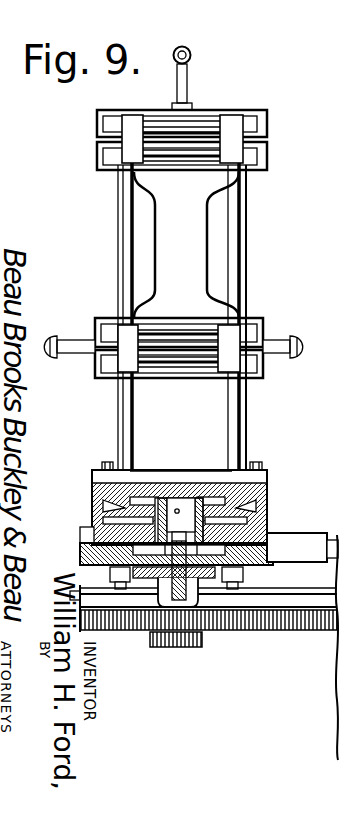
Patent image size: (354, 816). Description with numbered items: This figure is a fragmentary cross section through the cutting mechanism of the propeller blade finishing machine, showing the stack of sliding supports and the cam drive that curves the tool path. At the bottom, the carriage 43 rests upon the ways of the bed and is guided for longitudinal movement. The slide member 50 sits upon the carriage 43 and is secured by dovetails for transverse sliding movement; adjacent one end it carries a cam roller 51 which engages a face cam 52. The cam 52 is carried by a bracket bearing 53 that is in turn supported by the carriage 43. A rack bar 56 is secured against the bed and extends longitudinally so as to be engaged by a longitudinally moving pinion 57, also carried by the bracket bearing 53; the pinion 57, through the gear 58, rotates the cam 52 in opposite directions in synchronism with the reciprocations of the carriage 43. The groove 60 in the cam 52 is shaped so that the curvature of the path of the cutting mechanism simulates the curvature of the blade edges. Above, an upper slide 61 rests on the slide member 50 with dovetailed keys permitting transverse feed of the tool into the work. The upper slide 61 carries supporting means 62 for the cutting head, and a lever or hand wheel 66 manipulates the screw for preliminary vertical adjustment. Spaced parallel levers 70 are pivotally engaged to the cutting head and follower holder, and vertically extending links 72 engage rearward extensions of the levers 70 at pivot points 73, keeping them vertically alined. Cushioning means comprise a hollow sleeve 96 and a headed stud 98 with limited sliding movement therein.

The lever or hand wheel 66 is at (192, 55).
The pivot points 73 is at (200, 153).
The spaced parallel levers 70 is at (267, 132).
The vertically extending links 72 is at (195, 238).
The supporting means 62 is at (218, 270).
The hollow sleeve 96 is at (75, 343).
The headed stud 98 is at (55, 338).
The upper slide 61 is at (267, 494).
The slide member 50 is at (263, 523).
The carriage 43 is at (93, 534).
The face cam 52 is at (272, 552).
The cam roller 51 is at (247, 568).
The groove 60 is at (142, 552).
The bracket bearing 53 is at (170, 598).
The pinion 57 is at (213, 632).
The rack bar 56 is at (280, 628).
The gear 58 is at (183, 657).